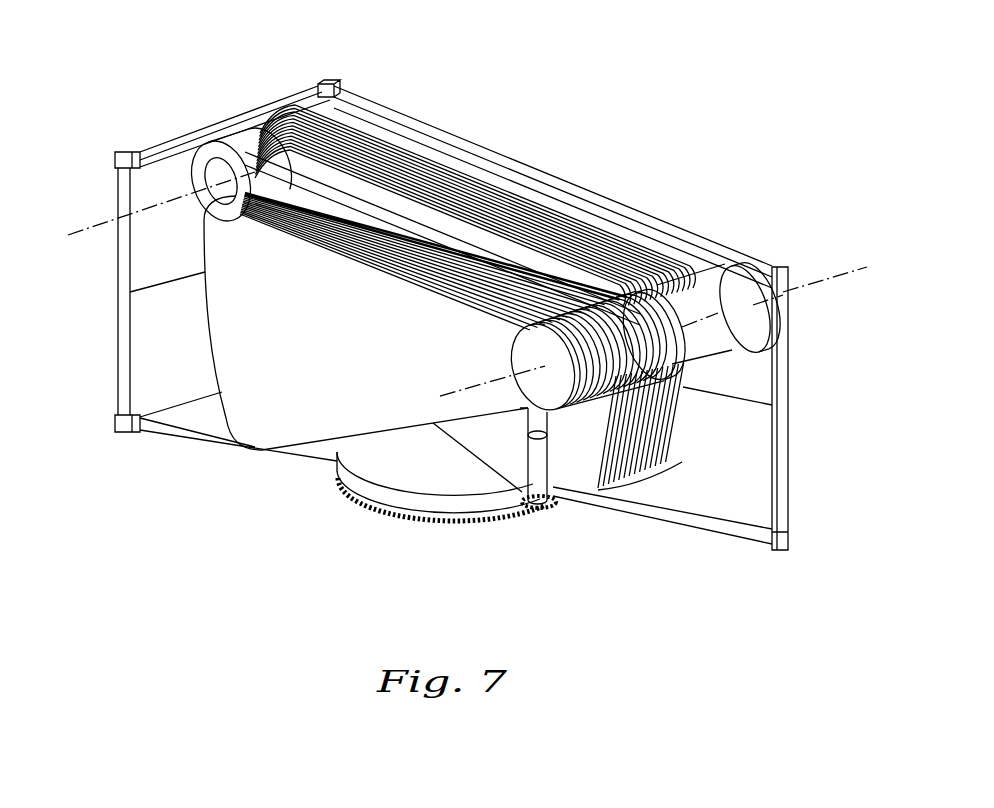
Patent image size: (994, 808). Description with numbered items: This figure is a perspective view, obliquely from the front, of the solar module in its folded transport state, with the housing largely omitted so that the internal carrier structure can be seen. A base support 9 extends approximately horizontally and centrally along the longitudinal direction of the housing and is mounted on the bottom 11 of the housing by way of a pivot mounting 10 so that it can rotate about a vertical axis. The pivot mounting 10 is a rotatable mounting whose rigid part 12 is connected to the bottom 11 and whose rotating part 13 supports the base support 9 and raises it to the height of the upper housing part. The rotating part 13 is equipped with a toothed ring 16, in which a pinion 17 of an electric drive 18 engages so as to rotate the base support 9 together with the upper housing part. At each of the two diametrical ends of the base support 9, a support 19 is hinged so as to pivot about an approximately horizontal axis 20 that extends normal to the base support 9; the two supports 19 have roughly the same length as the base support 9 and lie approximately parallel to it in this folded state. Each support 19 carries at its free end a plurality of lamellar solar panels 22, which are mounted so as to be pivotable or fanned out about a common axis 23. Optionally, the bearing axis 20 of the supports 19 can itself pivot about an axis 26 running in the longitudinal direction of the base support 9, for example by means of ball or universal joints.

The base support 9 is at (275, 145).
The pivot mounting 10 is at (298, 498).
The bottom 11 is at (207, 410).
The rigid part 12 is at (392, 520).
The rotating part 13 is at (448, 473).
The toothed ring 16 is at (422, 522).
The pinion 17 is at (547, 512).
The electric drive 18 is at (520, 522).
The support 19 is at (482, 170).
The axis 20 is at (80, 232).
The solar panels 22 is at (342, 355).
The axis 23 is at (423, 125).
The axis 26 is at (193, 128).